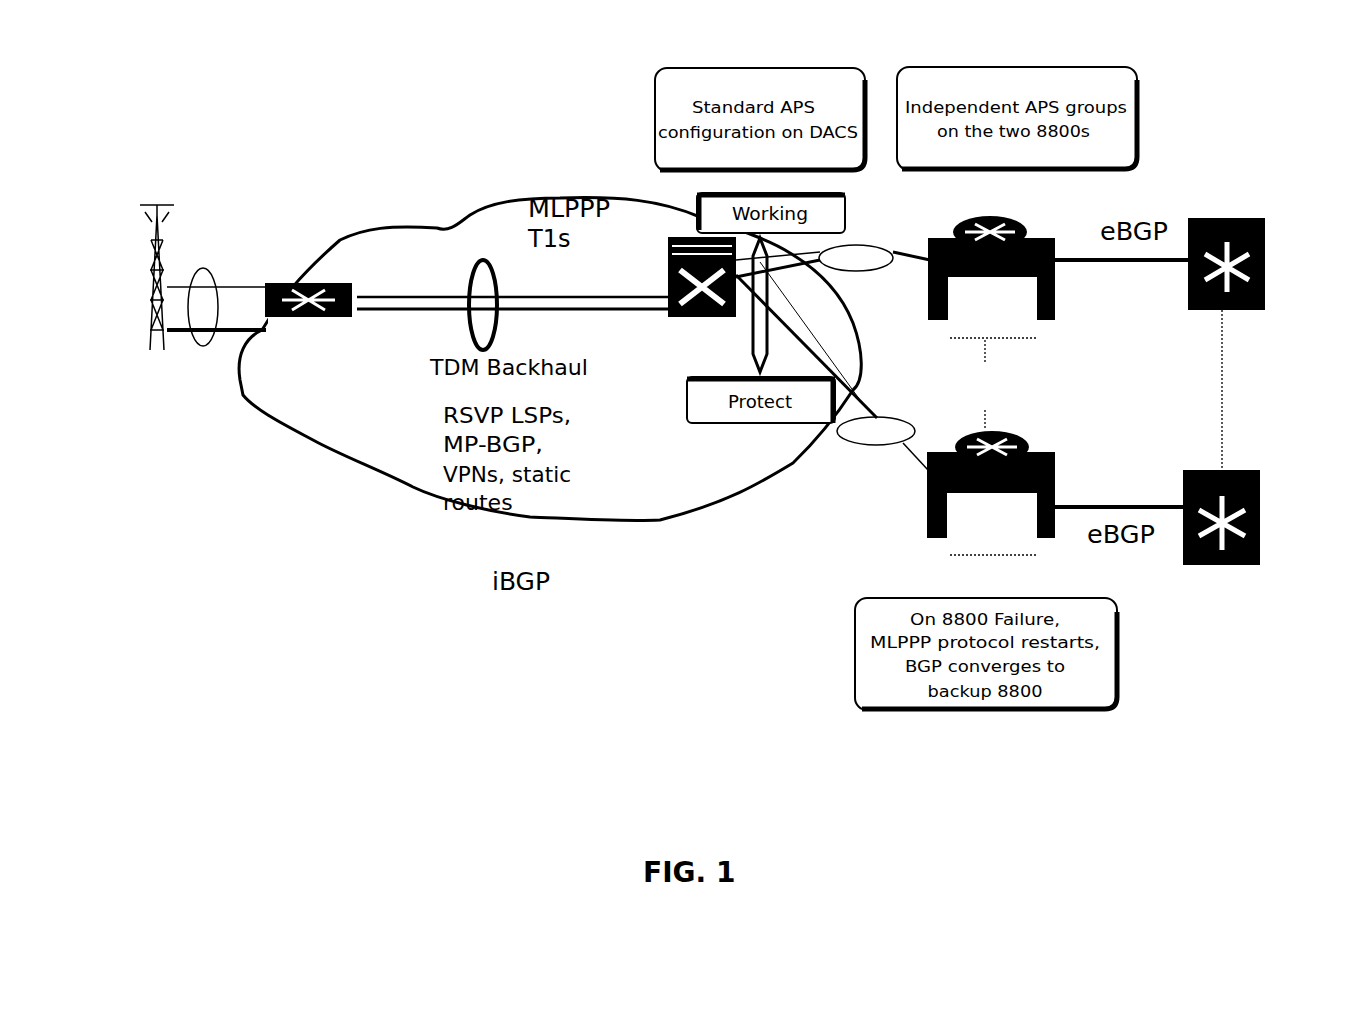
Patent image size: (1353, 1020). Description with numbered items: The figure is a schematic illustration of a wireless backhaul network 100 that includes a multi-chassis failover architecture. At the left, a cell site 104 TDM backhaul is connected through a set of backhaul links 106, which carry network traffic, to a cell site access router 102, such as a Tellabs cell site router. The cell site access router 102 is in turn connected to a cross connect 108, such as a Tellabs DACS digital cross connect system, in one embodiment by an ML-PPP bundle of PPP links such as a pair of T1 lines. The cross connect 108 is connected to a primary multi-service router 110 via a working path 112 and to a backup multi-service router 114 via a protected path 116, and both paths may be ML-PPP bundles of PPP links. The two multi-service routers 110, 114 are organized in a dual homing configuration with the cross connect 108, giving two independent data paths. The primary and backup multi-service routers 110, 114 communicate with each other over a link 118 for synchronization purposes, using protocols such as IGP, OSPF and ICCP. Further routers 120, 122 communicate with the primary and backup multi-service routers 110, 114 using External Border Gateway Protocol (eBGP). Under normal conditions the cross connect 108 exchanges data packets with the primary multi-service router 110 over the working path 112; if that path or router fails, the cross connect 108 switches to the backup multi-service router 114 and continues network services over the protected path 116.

The wireless backhaul network 100 is at (590, 167).
The cell site access router 102 is at (283, 287).
The cell site 104 is at (157, 270).
The backhaul links 106 is at (204, 348).
The cross connect 108 is at (662, 335).
The primary multi-service router 110 is at (1022, 217).
The working path 112 is at (860, 243).
The backup multi-service router 114 is at (932, 527).
The protected path 116 is at (853, 444).
The inter-router synchronization link 118 is at (985, 352).
The router 120 is at (1263, 258).
The router 122 is at (1250, 482).